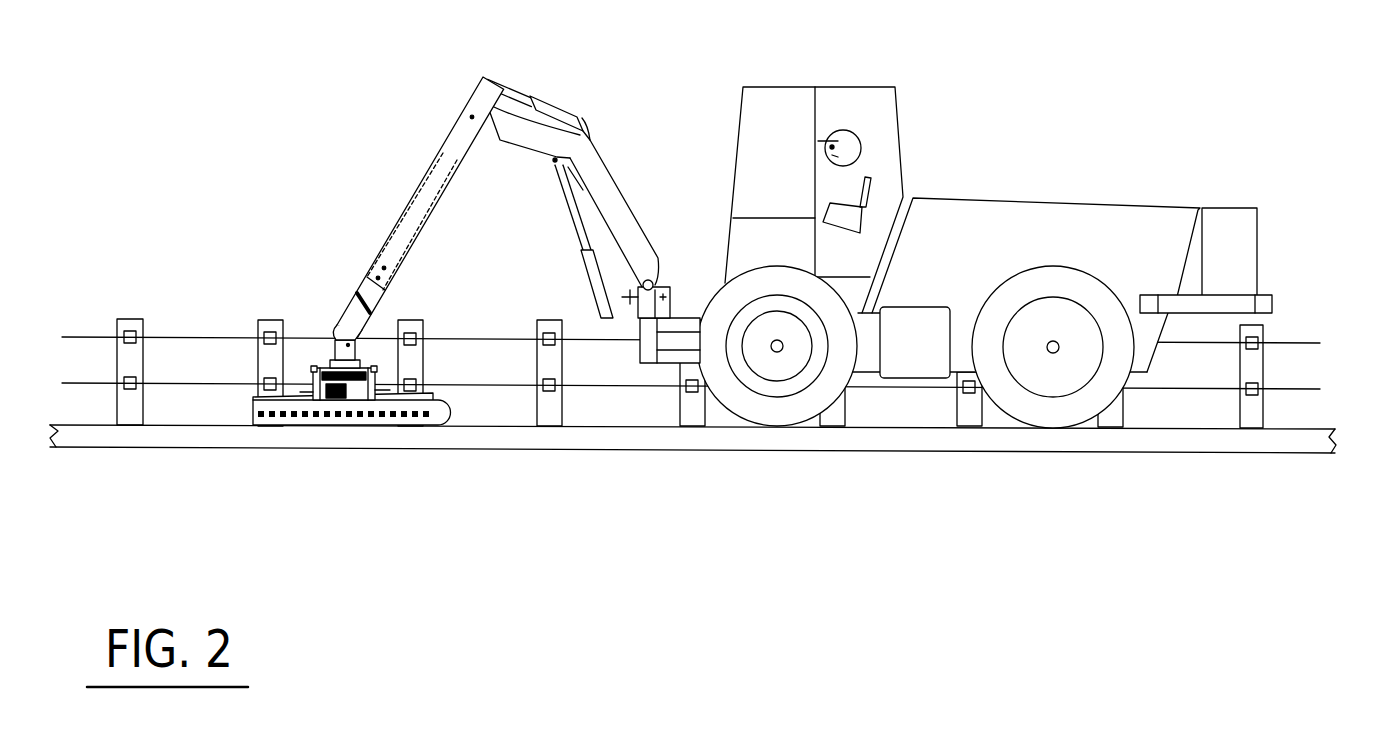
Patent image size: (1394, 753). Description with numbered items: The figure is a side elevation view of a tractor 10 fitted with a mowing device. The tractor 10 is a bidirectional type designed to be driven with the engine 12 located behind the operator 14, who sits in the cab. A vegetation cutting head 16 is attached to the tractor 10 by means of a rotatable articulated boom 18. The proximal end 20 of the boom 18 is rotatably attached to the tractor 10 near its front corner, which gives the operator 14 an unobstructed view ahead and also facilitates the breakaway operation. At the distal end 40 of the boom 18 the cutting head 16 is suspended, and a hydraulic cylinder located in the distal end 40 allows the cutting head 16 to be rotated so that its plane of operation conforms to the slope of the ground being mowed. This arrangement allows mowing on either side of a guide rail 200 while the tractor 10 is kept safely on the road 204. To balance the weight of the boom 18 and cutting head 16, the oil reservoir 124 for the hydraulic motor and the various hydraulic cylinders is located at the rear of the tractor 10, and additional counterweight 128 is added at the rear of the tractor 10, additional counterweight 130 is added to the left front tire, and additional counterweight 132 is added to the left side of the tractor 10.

The tractor 10 is at (960, 285).
The engine 12 is at (1020, 240).
The operator 14 is at (855, 130).
The vegetation cutting head 16 is at (348, 407).
The rotatable articulated boom 18 is at (460, 133).
The proximal end of the boom 20 is at (658, 253).
The distal end of the boom 40 is at (343, 302).
The oil reservoir 124 is at (1257, 230).
The counterweight 128 is at (1277, 297).
The counterweight 130 is at (787, 362).
The counterweight 132 is at (917, 352).
The guide rail 200 is at (130, 318).
The road 204 is at (163, 448).